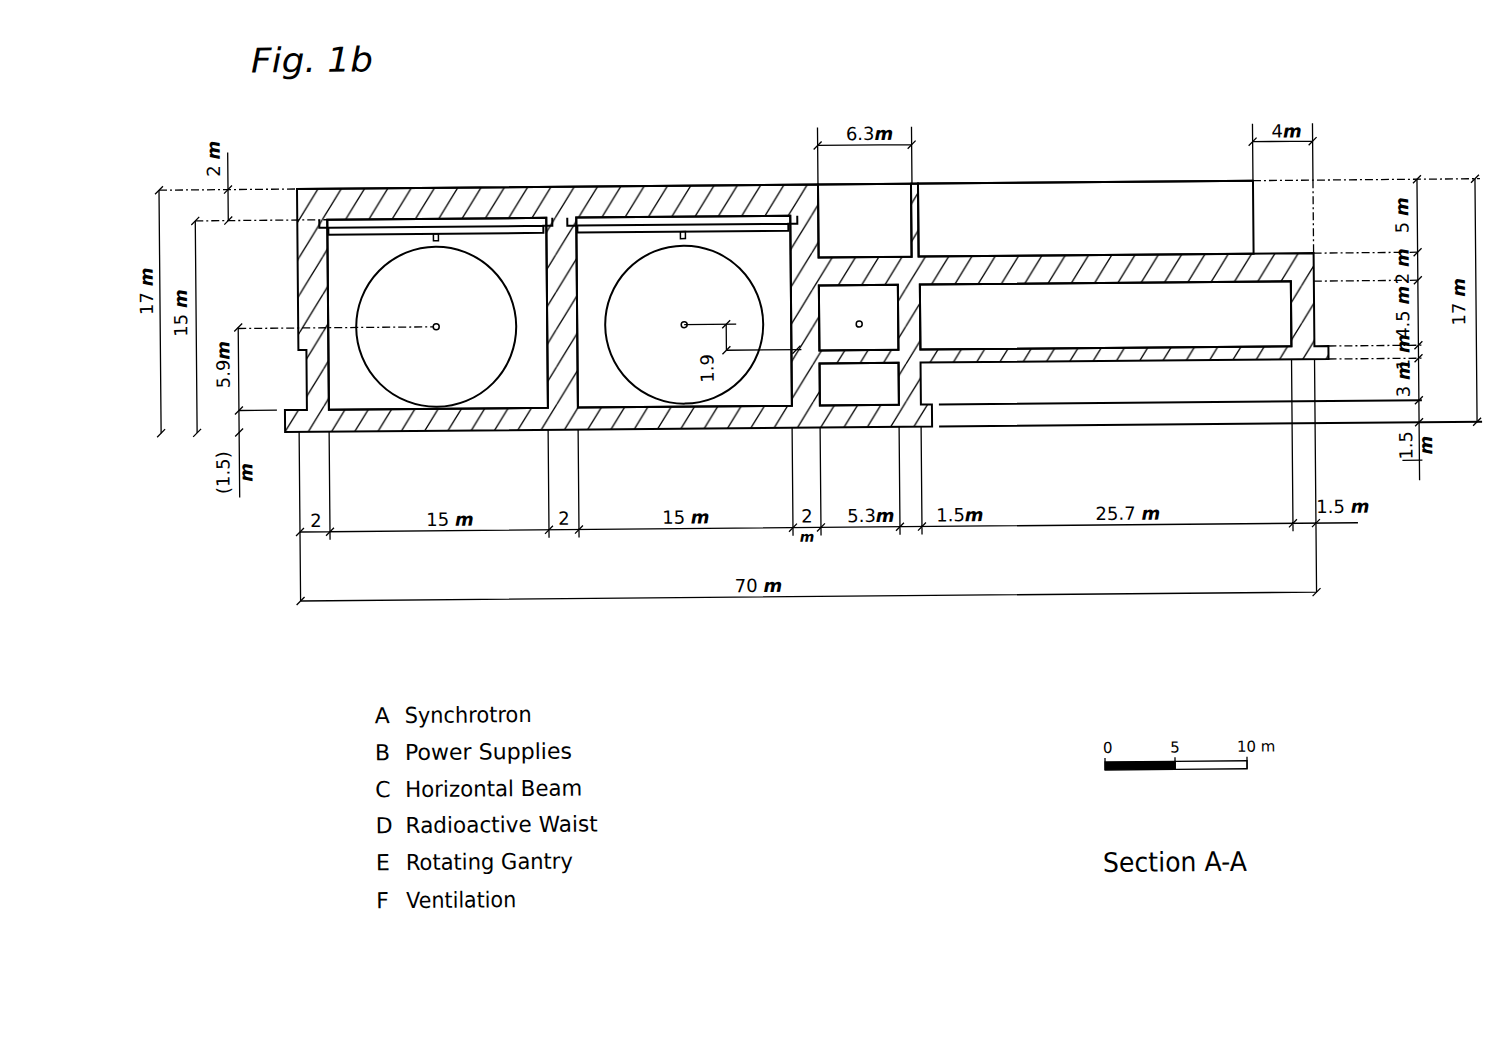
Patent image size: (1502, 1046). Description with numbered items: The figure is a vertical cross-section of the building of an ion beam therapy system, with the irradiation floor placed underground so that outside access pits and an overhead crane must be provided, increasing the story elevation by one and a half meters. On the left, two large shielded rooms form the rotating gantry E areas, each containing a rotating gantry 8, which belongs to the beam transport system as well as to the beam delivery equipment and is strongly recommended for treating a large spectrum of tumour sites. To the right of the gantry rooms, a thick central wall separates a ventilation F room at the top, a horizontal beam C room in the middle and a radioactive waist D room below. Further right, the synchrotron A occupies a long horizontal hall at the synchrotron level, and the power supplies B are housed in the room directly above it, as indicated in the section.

The rotating gantry 8 is at (387, 389).
The synchrotron A is at (1106, 315).
The power supplies B is at (1086, 219).
The horizontal beam C is at (859, 318).
The radioactive waist D is at (859, 384).
The rotating gantry E is at (559, 313).
The ventilation F is at (865, 221).